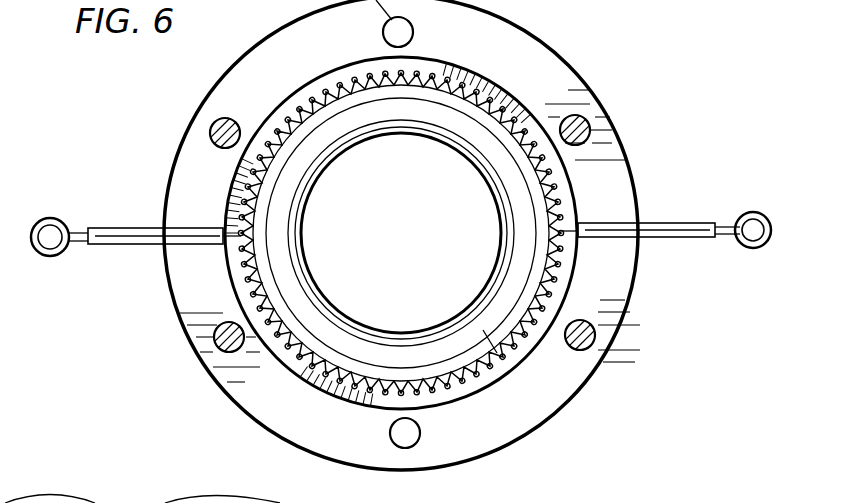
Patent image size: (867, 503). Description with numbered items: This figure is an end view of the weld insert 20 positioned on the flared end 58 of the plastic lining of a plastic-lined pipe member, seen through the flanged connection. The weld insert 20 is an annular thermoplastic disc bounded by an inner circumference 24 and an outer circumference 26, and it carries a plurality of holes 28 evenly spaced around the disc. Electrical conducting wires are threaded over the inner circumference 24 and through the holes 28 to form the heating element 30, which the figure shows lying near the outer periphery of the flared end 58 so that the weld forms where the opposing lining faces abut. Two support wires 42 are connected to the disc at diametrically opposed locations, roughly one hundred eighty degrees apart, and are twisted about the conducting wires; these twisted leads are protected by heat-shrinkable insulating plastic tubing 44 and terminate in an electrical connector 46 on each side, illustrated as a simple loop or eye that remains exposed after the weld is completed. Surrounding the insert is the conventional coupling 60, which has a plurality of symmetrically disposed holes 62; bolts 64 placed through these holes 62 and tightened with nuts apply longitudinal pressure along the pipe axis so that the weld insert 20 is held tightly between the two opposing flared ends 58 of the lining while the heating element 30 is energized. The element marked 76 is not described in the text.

The weld insert 20 is at (530, 348).
The inner circumference 24 is at (520, 320).
The outer circumference 26 is at (305, 383).
The holes 28 is at (306, 98).
The heating element 30 is at (278, 170).
The support wires 42 is at (562, 228).
The insulating plastic tubing 44 is at (160, 244).
The electrical connector 46 is at (58, 220).
The flared ends of lining 58 is at (530, 385).
The coupling 60 is at (520, 45).
The holes of coupling 62 is at (410, 448).
The bolts 64 is at (213, 124).
The link 76 is at (105, 500).